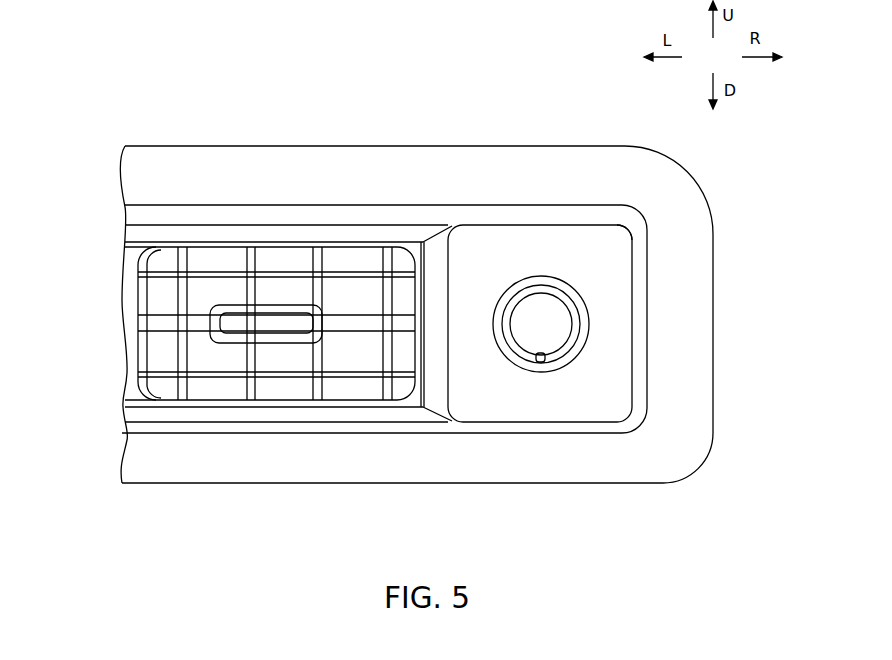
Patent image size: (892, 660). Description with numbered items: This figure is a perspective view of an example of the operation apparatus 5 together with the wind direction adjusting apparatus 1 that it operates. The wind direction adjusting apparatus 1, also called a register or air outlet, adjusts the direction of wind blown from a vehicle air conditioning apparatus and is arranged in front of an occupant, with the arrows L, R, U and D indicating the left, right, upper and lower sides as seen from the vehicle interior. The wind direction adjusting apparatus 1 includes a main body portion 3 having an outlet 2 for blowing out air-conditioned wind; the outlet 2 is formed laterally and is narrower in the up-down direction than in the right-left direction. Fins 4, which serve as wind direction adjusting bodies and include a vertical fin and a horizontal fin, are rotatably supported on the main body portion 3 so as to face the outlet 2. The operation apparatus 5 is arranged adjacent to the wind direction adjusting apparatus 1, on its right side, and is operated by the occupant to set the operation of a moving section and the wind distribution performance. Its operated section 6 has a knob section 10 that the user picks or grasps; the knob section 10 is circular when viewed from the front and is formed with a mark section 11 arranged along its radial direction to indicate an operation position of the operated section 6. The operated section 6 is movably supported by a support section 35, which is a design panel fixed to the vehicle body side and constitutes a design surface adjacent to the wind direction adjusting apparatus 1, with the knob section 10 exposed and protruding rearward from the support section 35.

The wind direction adjusting apparatus 1 is at (284, 201).
The outlet 2 is at (130, 392).
The main body portion 3 is at (137, 211).
The fin 4 is at (180, 400).
The operation apparatus 5 is at (633, 257).
The operated section 6 is at (541, 313).
The knob section 10 is at (517, 282).
The mark section 11 is at (538, 360).
The support section 35 is at (621, 237).